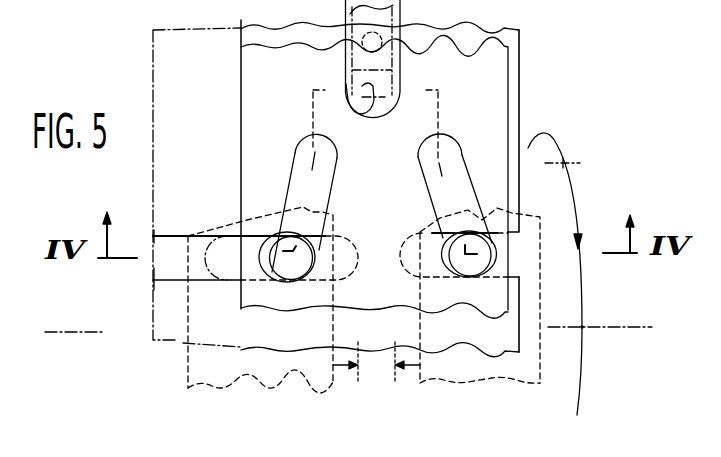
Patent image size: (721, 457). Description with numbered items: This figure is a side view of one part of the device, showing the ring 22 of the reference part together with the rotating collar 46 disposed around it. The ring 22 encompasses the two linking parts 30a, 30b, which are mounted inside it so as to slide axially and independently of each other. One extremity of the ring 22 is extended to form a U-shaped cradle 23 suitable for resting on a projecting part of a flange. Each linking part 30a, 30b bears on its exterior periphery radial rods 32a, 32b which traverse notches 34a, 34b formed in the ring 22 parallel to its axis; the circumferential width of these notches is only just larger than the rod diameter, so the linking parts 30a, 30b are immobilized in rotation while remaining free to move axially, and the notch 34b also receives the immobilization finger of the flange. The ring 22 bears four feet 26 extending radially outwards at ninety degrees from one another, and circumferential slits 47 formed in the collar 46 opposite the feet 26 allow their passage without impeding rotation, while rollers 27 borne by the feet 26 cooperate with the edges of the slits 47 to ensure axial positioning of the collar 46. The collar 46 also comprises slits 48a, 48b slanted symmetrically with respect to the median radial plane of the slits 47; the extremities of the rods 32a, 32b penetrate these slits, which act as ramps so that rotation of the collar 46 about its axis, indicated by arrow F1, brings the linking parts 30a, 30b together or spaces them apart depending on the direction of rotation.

The ring 22 is at (490, 34).
The cradle 23 is at (163, 64).
The feet 26 is at (347, 72).
The rollers 27 is at (398, 69).
The rotating collar 46 is at (497, 85).
The circumferential slits 47 is at (369, 98).
The slanted slit 48a is at (470, 162).
The slanted slit 48b is at (291, 178).
The radial rod 32a is at (453, 268).
The radial rod 32b is at (272, 272).
The notch 34a is at (510, 277).
The notch 34b is at (178, 280).
The linking part 30a is at (472, 388).
The linking part 30b is at (208, 387).
The arrow F1 is at (592, 203).